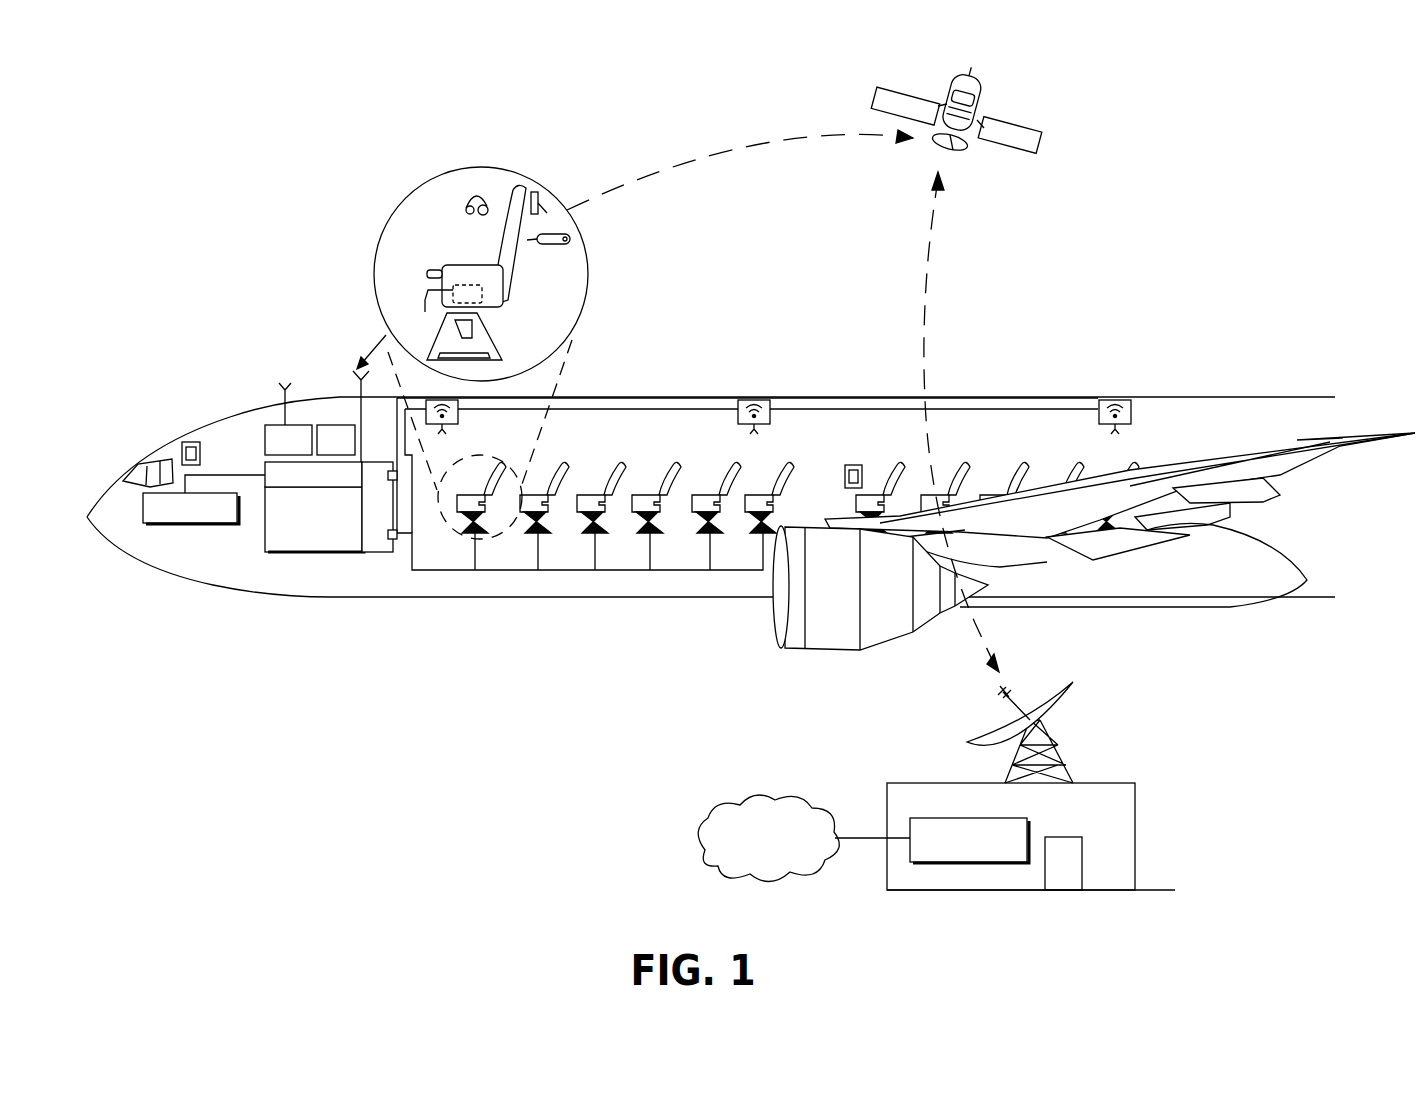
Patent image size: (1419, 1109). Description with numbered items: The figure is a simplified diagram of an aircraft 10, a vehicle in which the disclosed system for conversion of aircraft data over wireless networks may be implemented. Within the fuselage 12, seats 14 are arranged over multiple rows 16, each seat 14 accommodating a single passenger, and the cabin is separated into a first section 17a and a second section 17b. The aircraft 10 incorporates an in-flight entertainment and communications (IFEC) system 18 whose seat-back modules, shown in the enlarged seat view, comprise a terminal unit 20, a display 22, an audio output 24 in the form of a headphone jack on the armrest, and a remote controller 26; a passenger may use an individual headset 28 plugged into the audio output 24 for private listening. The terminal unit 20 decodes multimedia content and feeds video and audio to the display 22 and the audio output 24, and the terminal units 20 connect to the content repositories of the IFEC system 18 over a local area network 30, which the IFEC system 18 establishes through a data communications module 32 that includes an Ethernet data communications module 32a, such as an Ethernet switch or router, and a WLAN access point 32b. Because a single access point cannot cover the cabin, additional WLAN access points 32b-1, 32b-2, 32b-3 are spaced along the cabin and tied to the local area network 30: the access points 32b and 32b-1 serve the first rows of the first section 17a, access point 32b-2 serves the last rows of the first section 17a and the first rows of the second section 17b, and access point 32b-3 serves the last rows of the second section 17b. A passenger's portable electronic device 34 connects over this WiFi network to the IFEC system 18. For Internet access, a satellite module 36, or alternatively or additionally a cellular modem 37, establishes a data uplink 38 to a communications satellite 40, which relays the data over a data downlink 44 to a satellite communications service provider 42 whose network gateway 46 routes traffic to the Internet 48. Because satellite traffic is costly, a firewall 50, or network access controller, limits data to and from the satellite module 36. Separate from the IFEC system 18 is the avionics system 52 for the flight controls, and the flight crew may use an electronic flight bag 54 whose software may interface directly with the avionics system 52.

The aircraft 10 is at (751, 523).
The fuselage 12 is at (1031, 398).
The seat 14 is at (481, 353).
The rows 16 is at (794, 494).
The first section 17a is at (802, 453).
The second section 17b is at (865, 453).
The in-flight entertainment and communications (IFEC) system 18 is at (305, 553).
The terminal unit 20 is at (435, 316).
The display 22 is at (548, 212).
The audio output 24 is at (432, 272).
The remote controller 26 is at (515, 281).
The headset 28 is at (466, 208).
The local area network 30 is at (690, 398).
The data communications module 32 is at (372, 460).
The Ethernet data communications module 32a is at (397, 542).
The WLAN access point 32b is at (397, 477).
The WLAN access point 32b-1 is at (458, 422).
The WLAN access point 32b-2 is at (757, 398).
The WLAN access point 32b-3 is at (1116, 398).
The portable electronic device 34 is at (843, 475).
The satellite module 36 is at (330, 425).
The cellular modem 37 is at (297, 425).
The data uplink 38 is at (687, 160).
The communications satellite 40 is at (976, 140).
The satellite communications service provider 42 is at (1031, 811).
The data downlink 44 is at (918, 283).
The network gateway 46 is at (955, 863).
The Internet 48 is at (757, 796).
The firewall 50 is at (265, 485).
The avionics system 52 is at (187, 524).
The electronic flight bag 54 is at (180, 446).